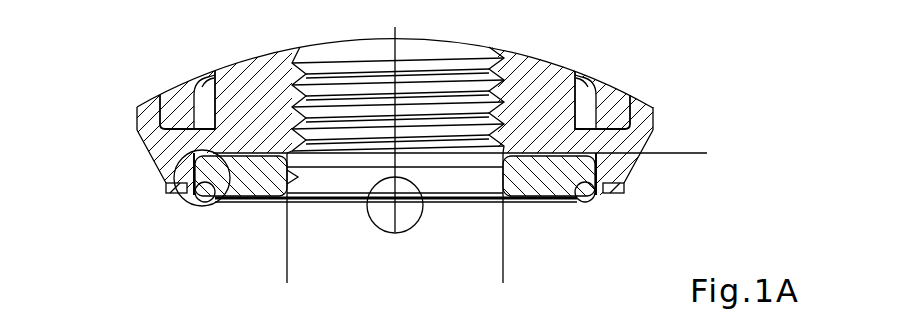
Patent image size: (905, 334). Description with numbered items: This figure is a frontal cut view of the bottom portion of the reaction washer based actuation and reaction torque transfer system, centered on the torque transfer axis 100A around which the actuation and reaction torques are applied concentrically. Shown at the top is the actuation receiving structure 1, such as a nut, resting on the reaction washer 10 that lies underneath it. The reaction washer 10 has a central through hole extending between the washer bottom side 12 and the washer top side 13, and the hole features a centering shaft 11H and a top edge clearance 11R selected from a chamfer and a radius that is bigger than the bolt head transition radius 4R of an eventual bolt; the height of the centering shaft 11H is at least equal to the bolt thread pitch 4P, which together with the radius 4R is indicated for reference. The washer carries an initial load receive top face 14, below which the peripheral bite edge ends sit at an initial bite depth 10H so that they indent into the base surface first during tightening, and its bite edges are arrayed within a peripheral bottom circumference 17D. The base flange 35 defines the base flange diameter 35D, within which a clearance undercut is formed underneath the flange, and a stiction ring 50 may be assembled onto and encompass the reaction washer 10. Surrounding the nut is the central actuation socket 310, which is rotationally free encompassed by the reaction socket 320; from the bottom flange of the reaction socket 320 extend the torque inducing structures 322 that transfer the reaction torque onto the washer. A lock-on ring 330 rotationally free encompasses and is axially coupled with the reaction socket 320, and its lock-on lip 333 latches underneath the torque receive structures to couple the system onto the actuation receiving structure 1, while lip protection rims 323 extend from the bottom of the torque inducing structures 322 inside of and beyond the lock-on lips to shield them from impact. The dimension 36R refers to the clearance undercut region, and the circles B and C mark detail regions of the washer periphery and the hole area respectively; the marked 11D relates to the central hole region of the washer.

The actuation receiving structure 1 is at (243, 72).
The reaction washer 10 is at (605, 217).
The washer bottom side 12 is at (473, 240).
The washer top side 13 is at (415, 150).
The initial load receive top face 14 is at (517, 155).
The base flange 35 is at (598, 185).
The stiction ring 50 is at (197, 203).
The torque transfer axis 100A is at (395, 160).
The central actuation socket 310 is at (178, 97).
The reaction socket 320 is at (155, 112).
The torque inducing structures 322 is at (178, 168).
The lip protection rims 323 is at (187, 190).
The lock-on ring 330 is at (138, 112).
The lock-on lip 333 is at (182, 187).
The detail B is at (172, 190).
The detail C is at (421, 213).
The bolt head transition radius 4R is at (280, 150).
The top edge clearance 11R is at (297, 127).
The thread pitch 4P is at (321, 135).
The centering shaft 11H is at (358, 130).
The diameter 11/ 11D is at (503, 277).
The peripheral bottom circumference 17D is at (575, 293).
The base flange diameter 35D is at (195, 300).
The radius 36R is at (160, 242).
The initial bite depth 10H is at (707, 198).